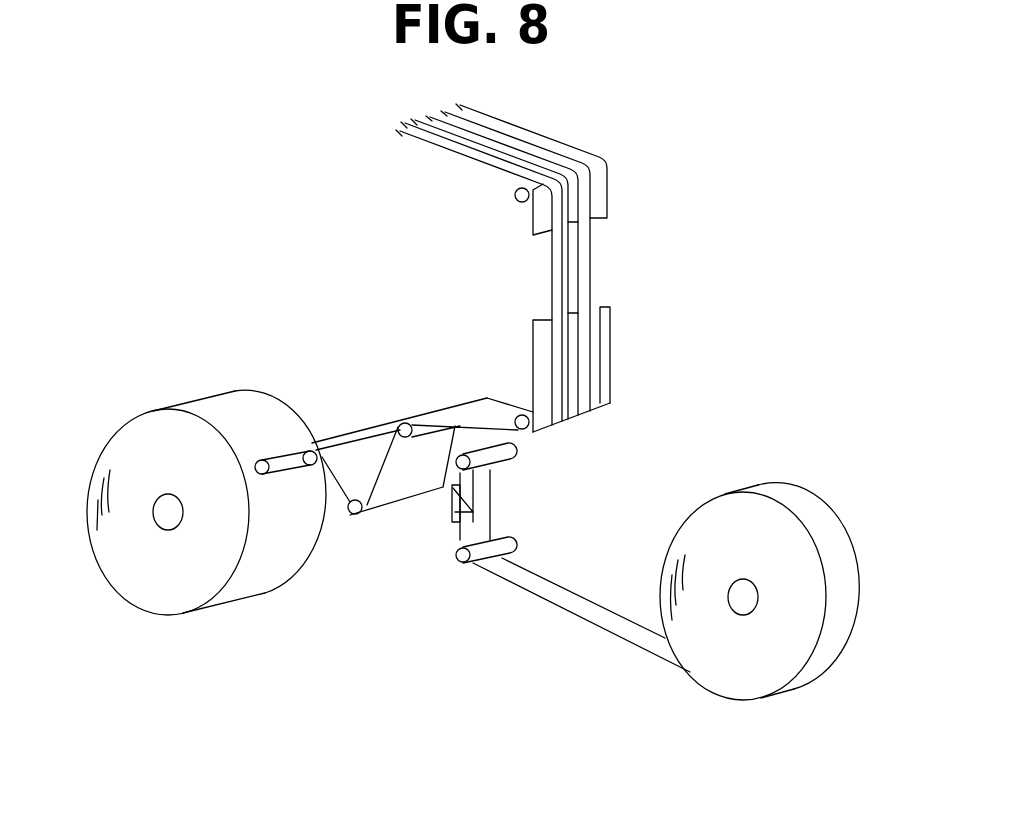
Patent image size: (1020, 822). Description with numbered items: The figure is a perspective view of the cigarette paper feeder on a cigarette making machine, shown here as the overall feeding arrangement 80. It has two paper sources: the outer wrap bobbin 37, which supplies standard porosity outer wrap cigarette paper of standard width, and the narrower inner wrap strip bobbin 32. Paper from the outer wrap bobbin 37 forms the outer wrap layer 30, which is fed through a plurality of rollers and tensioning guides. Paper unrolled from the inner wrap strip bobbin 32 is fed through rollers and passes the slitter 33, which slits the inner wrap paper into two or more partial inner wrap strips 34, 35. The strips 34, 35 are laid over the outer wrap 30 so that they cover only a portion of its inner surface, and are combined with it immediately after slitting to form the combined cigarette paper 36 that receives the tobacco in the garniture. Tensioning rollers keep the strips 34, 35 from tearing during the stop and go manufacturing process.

The tape application system 80 is at (328, 290).
The combined cigarette paper 36 is at (557, 133).
The partial inner wrap strip 35 is at (592, 265).
The partial inner wrap strip 34 is at (555, 297).
The outer wrap layer 30 is at (540, 215).
The slitter 33 is at (453, 513).
The outer wrap bobbin 37 is at (120, 528).
The inner wrap strip bobbin 32 is at (823, 520).